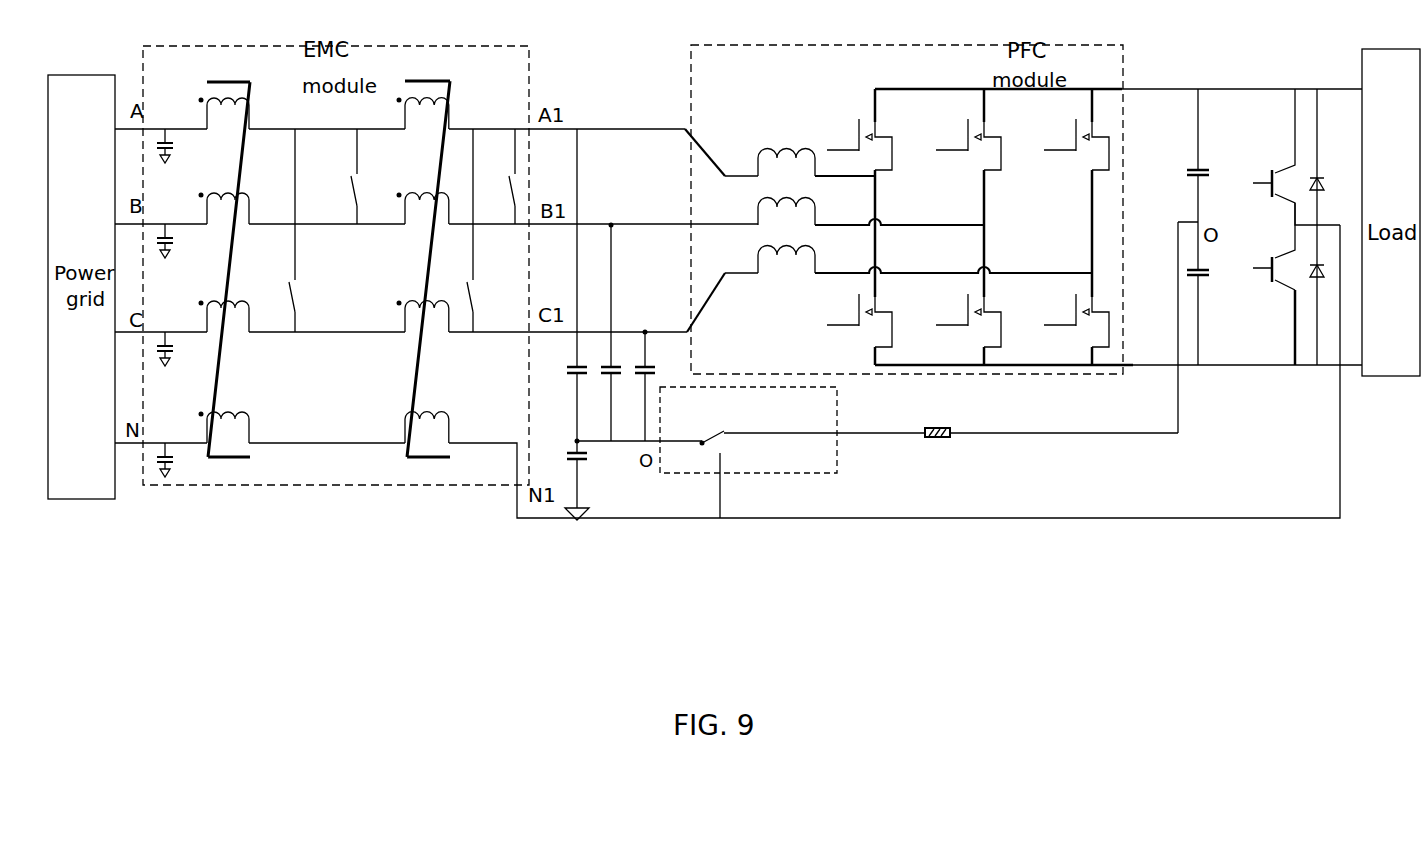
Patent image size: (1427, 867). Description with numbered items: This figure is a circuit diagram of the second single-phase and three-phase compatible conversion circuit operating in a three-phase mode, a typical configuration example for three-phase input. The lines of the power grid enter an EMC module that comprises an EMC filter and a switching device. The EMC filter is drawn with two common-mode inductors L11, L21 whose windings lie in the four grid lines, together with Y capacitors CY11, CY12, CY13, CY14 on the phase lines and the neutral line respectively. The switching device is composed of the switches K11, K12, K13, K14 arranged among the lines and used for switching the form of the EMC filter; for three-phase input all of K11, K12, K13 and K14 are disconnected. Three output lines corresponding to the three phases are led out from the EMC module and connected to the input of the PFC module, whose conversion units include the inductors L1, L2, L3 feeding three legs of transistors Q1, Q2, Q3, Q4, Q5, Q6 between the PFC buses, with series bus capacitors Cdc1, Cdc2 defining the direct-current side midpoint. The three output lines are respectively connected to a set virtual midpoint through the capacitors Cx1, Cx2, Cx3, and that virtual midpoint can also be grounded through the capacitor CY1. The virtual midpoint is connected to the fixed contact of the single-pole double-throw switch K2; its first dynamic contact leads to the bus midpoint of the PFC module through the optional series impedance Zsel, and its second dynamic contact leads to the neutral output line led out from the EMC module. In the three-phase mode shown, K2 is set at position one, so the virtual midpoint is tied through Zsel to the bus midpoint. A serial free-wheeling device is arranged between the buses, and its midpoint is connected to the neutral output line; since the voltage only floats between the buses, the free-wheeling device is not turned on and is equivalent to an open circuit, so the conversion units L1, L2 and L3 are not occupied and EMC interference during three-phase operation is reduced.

The first common-mode inductor L11 is at (225, 283).
The second common-mode inductor L21 is at (424, 283).
The Y capacitor on phase A CY11 is at (140, 147).
The Y capacitor on phase B CY12 is at (140, 242).
The Y capacitor on phase C CY13 is at (140, 351).
The Y capacitor on neutral CY14 is at (140, 462).
The switch K11 is at (338, 176).
The switch K12 is at (497, 176).
The switch K13 is at (321, 230).
The switch K14 is at (490, 230).
The capacitor Cx1 is at (562, 285).
The capacitor Cx2 is at (605, 332).
The capacitor Cx3 is at (660, 386).
The capacitor CY1 is at (593, 480).
The single-pole double-throw switch K2 is at (721, 464).
The impedance Zsel is at (969, 445).
The conversion unit L1 is at (786, 147).
The conversion unit L2 is at (786, 203).
The conversion unit L3 is at (786, 252).
The switching transistor Q1 is at (859, 129).
The switching transistor Q2 is at (859, 323).
The switching transistor Q3 is at (968, 129).
The switching transistor Q4 is at (968, 323).
The switching transistor Q5 is at (1076, 129).
The switching transistor Q6 is at (1076, 323).
The DC bus capacitor Cdc1 is at (1217, 155).
The DC bus capacitor Cdc2 is at (1217, 293).